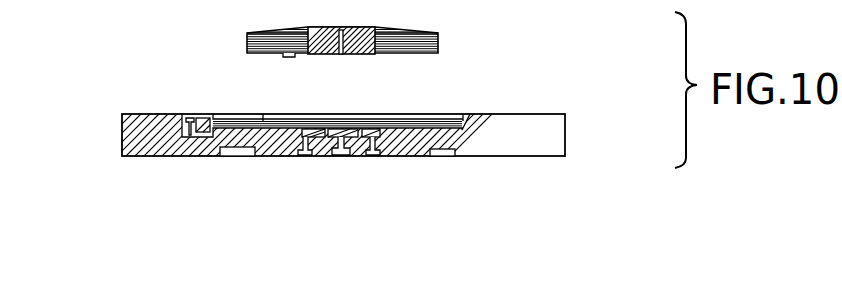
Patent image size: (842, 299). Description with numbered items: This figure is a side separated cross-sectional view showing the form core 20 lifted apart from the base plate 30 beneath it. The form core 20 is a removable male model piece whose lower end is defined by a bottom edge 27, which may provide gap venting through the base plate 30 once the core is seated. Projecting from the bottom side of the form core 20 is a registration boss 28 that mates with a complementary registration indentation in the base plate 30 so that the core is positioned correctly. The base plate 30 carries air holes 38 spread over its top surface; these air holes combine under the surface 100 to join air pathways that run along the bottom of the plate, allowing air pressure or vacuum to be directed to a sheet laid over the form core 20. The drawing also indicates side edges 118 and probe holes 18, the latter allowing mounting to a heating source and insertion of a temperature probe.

The surface 100 is at (533, 114).
The form core 20 is at (440, 45).
The bottom edge 27 is at (247, 42).
The registration boss 28 is at (287, 58).
The air holes 38 is at (372, 130).
The probe holes 18 is at (373, 157).
The side edges 118 is at (122, 143).
The base plate 30 is at (594, 134).